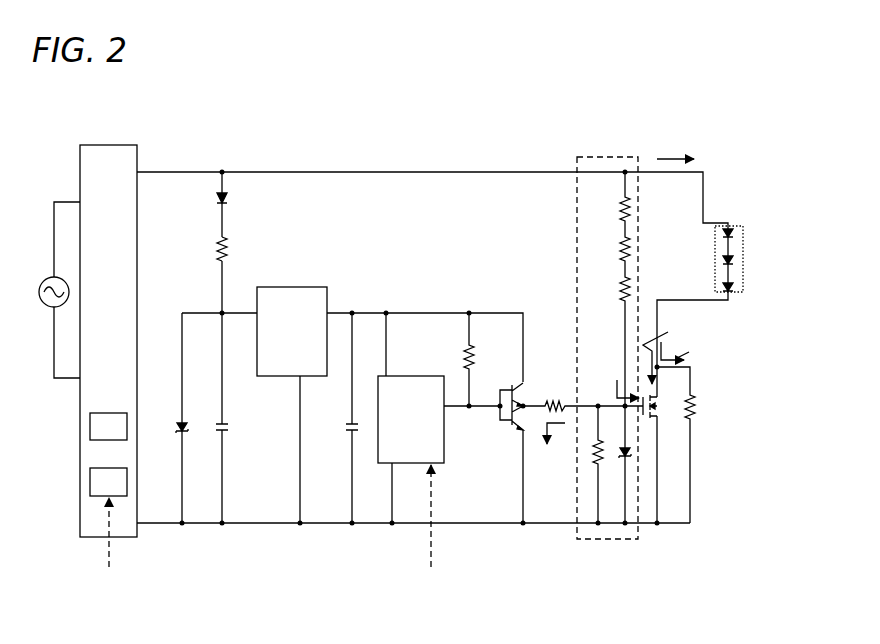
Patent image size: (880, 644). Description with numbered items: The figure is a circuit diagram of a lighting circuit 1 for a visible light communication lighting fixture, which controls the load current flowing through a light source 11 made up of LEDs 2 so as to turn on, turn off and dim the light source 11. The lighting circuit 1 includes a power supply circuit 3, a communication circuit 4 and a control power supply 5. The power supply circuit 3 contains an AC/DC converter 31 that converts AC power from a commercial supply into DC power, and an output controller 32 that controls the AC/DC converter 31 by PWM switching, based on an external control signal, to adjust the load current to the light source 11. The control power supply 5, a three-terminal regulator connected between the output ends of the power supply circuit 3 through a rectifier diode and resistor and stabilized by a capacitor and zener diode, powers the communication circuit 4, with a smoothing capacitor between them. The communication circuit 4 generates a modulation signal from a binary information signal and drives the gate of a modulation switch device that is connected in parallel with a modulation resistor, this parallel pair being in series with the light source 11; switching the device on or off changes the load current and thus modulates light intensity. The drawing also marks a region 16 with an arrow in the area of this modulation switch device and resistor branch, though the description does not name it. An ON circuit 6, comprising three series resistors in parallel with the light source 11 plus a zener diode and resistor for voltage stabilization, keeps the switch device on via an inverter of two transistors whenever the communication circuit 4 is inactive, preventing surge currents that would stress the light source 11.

The lighting circuit 1 is at (38, 121).
The LEDs 2 is at (735, 234).
The power supply circuit 3 is at (137, 232).
The communication circuit 4 is at (417, 376).
The control power supply 5 is at (297, 287).
The ON circuit 6 is at (620, 157).
The light source 11 is at (740, 226).
The current adjusting unit 16 is at (675, 441).
The AC/DC converter 31 is at (108, 427).
The output controller 32 is at (108, 482).